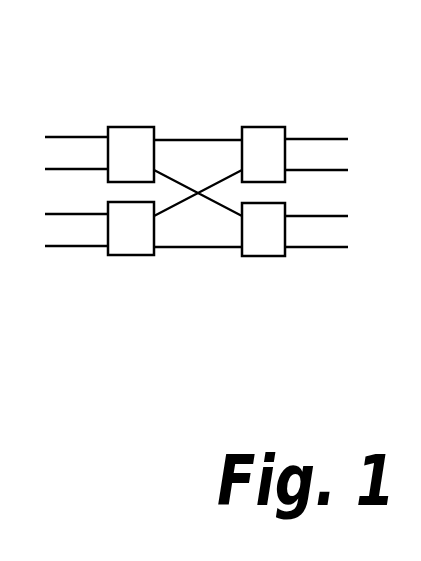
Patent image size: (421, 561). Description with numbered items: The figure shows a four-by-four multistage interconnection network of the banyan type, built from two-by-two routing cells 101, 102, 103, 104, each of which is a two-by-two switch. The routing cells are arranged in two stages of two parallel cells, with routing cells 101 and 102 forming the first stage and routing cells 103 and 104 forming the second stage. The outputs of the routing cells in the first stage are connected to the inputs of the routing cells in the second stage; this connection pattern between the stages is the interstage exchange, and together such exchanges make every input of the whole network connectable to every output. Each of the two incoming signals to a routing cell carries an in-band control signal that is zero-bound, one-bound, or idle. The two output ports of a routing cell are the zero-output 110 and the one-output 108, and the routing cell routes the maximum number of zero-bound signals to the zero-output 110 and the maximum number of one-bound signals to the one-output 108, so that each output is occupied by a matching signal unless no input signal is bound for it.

The routing cell 101 is at (128, 127).
The routing cell 102 is at (138, 250).
The routing cell 103 is at (268, 256).
The routing cell 104 is at (268, 137).
The 1-output 108 is at (183, 187).
The 0-output 110 is at (205, 140).